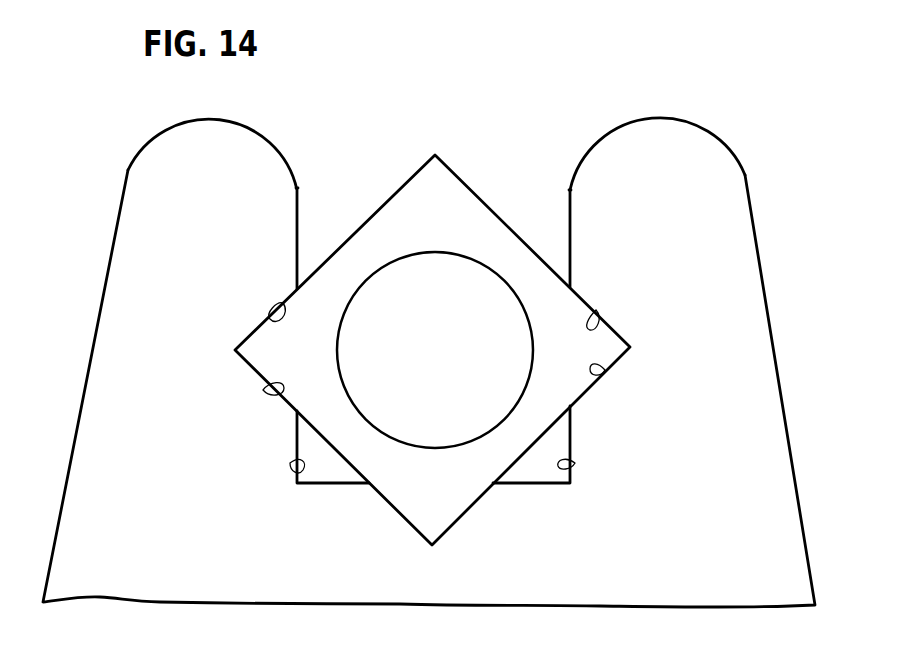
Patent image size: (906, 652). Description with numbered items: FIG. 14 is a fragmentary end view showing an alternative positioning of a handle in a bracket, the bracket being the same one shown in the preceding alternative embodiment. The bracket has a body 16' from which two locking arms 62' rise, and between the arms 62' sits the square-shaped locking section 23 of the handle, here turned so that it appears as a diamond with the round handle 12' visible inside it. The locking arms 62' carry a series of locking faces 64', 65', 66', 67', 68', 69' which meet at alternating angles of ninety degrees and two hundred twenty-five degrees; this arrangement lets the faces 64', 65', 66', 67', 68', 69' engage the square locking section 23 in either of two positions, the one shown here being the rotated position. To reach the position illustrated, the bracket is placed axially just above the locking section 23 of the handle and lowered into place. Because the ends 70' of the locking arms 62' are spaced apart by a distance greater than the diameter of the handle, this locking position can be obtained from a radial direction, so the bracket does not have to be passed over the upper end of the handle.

The central opening 12' is at (435, 350).
The base body 16' is at (429, 388).
The locking section 23 is at (413, 192).
The locking arms 62' is at (436, 300).
The locking face 64' is at (267, 465).
The locking face 65' is at (241, 403).
The locking face 66' is at (253, 295).
The locking face 67' is at (597, 464).
The locking face 68' is at (627, 391).
The locking face 69' is at (621, 290).
The ends of the locking arms 70' is at (439, 139).